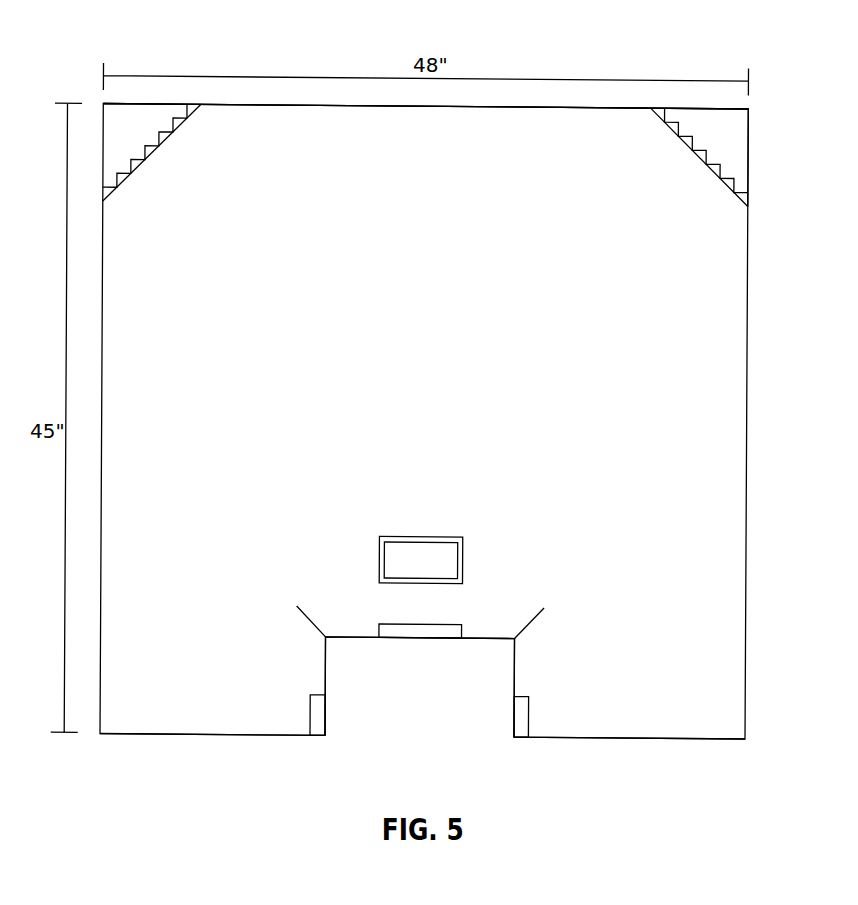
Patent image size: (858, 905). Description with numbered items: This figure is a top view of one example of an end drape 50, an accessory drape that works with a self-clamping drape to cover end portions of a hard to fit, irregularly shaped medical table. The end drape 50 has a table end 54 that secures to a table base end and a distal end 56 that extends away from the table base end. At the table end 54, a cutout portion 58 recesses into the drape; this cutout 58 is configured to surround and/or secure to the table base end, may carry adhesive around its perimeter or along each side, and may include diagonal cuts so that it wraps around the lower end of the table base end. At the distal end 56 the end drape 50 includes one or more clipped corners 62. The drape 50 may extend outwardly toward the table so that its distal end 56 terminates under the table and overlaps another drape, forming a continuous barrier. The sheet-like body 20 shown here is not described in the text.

The panel 20 is at (688, 442).
The end drape 50 is at (533, 37).
The table end 54 is at (632, 725).
The distal end 56 is at (620, 123).
The cutout portion 58 is at (472, 760).
The clipped corners 62 is at (162, 133).